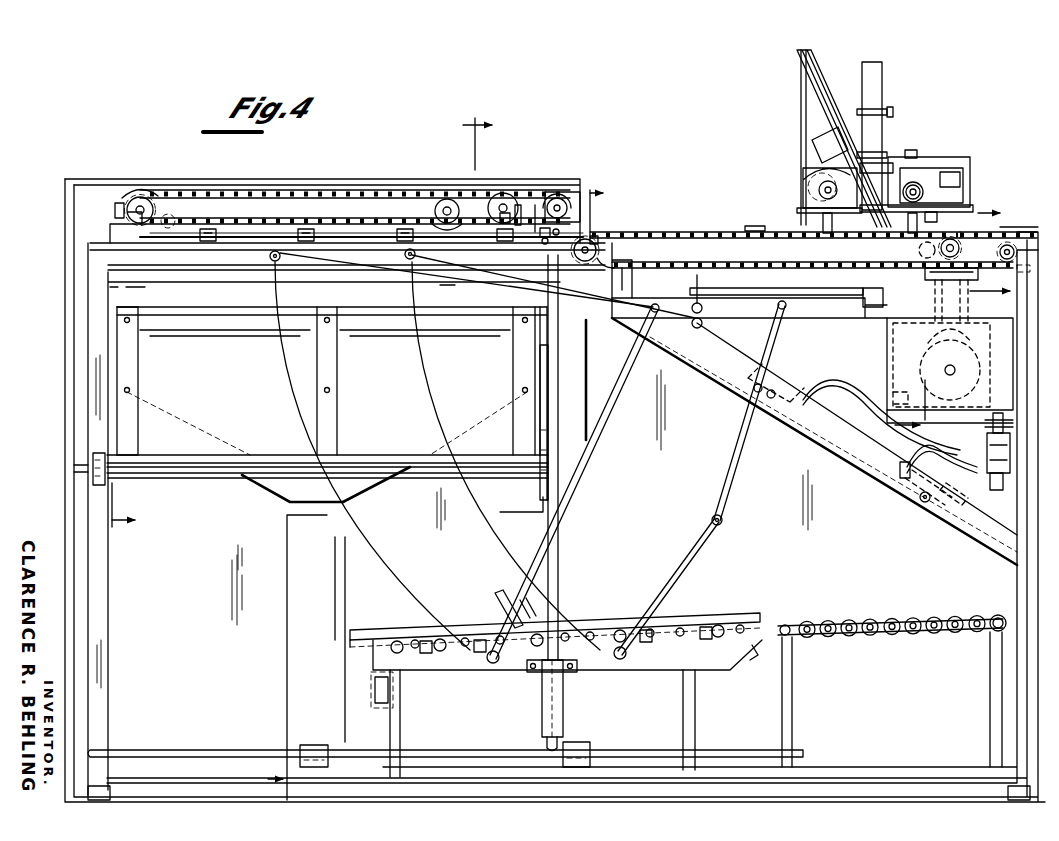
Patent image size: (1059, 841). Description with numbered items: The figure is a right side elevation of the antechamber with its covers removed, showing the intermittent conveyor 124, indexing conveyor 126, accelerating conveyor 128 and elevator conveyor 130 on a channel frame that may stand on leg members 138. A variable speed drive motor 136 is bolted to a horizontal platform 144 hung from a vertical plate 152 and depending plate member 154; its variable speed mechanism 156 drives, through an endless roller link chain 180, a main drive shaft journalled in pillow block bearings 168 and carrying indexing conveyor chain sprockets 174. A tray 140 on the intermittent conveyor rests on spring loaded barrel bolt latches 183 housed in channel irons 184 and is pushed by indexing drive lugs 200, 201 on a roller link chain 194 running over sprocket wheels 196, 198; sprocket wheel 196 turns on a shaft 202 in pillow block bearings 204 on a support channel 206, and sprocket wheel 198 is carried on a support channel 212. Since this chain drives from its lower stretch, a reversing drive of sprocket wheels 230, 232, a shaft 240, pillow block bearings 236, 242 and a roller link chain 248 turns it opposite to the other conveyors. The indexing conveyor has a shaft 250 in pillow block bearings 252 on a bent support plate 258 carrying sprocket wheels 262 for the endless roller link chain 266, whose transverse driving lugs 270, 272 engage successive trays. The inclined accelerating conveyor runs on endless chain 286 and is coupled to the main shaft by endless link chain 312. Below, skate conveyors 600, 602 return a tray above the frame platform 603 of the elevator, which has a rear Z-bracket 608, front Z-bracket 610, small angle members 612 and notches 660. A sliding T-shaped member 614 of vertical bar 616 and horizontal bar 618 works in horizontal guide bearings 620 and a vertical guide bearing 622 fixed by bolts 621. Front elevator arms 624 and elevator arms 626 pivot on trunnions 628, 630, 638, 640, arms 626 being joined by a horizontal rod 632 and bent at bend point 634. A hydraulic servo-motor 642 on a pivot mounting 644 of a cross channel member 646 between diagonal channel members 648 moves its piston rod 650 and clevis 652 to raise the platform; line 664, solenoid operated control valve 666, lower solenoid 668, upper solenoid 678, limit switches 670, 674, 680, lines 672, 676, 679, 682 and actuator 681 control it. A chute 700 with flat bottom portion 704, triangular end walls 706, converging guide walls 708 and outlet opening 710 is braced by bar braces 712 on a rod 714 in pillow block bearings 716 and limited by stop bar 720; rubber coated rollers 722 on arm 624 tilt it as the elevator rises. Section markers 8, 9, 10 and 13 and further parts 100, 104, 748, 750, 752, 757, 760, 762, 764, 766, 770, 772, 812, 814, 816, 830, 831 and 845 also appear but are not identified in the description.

The tree harvesting machine 100 is at (886, 84).
The boom 104 is at (800, 120).
The intermittent conveyor 124 is at (386, 176).
The indexing conveyor 126 is at (710, 229).
The accelerating conveyor 128 is at (1032, 232).
The elevator conveyor 130 is at (605, 604).
The variable speed drive motor 136 is at (931, 363).
The leg members 138 is at (150, 778).
The tray 140 is at (750, 612).
The horizontal platform 144 is at (936, 419).
The vertical plate 152 is at (893, 350).
The depending plate member 154 is at (890, 381).
The variable speed mechanism 156 is at (933, 340).
The pillow block bearings 168 is at (961, 250).
The indexing conveyor chain sprockets 174 is at (919, 250).
The endless roller link chain 180 is at (930, 290).
The spring loaded barrel bolt latch 183 is at (214, 243).
The channel iron 184 is at (316, 234).
The roller link chain 194 is at (308, 191).
The sprocket wheel 196 is at (148, 203).
The sprocket wheel 198 is at (503, 193).
The indexing drive lug 200 is at (124, 199).
The indexing drive lug 201 is at (505, 212).
The shaft 202 is at (115, 210).
The pillow block bearings 204 is at (170, 221).
The support channel 206 is at (118, 233).
The support channel 212 is at (538, 237).
The sprocket wheel 230 is at (447, 199).
The sprocket wheel 232 is at (535, 205).
The pillow block bearings 236 is at (434, 224).
The shaft 240 is at (578, 195).
The pillow block bearings 242 is at (556, 229).
The roller link chain 248 is at (518, 205).
The shaft 250 is at (583, 239).
The pillow block bearings 252 is at (601, 255).
The bent support plate 258 is at (636, 262).
The sprocket wheels 262 is at (624, 238).
The endless roller link chain 266 is at (678, 230).
The transverse driving lug 270 is at (722, 229).
The transverse driving lug 272 is at (805, 288).
The roller link type endless chain 286 is at (1026, 230).
The endless link chain 312 is at (1012, 272).
The skate conveyor 600 is at (897, 641).
The third skate conveyor 602 is at (708, 605).
The frame platform 603 is at (153, 258).
The rear Z-bracket 608 is at (758, 646).
The front Z-bracket 610 is at (350, 636).
The small angle members 612 is at (455, 632).
The sliding T-shaped member 614 is at (547, 745).
The vertical bar 616 is at (559, 560).
The horizontal bar 618 is at (618, 750).
The horizontal guide bearings 620 is at (312, 745).
The bolts 621 is at (533, 672).
The stabilizer bar vertical guide bearing 622 is at (876, 416).
The front elevator arms 624 is at (398, 276).
The elevator arms 626 is at (738, 462).
The trunnions 628 is at (786, 309).
The trunnions 630 is at (405, 255).
The horizontal rod 632 is at (586, 322).
The bend point 634 is at (722, 523).
The trunnion 638 is at (655, 304).
The trunnion 640 is at (270, 256).
The hydraulic servo-motor 642 is at (833, 405).
The pivot mounting 644 is at (923, 504).
The cross channel member 646 is at (951, 500).
The diagonal channel members 648 is at (973, 536).
The piston rod 650 is at (775, 393).
The clevis 652 is at (761, 386).
The notches 660 is at (603, 633).
The line 664 is at (907, 465).
The solenoid operated control valve 666 is at (996, 412).
The lower solenoid 668 is at (990, 482).
The limit switch 670 is at (392, 692).
The line 672 is at (86, 470).
The limit switch 674 is at (542, 244).
The line 676 is at (86, 457).
The upper solenoid 678 is at (987, 455).
The line 679 is at (858, 292).
The limit switch 680 is at (697, 300).
The actuator 681 is at (745, 392).
The lines 682 is at (862, 298).
The chute 700 is at (218, 395).
The flat bottom portion 704 is at (374, 315).
The triangular end walls 706 is at (86, 362).
The converging guide walls 708 is at (252, 481).
The outlet opening 710 is at (348, 504).
The bar braces 712 is at (138, 386).
The rod 714 is at (187, 479).
The pillow block bearings 716 is at (118, 478).
The stop bar 720 is at (203, 272).
The rubber coated rollers 722 is at (497, 594).
The cross bar 748 is at (240, 463).
The support 750 is at (850, 231).
The gear 752 is at (810, 191).
The bracket 757 is at (940, 214).
The saw housing 760 is at (885, 130).
The support 762 is at (950, 212).
The base plate 764 is at (800, 210).
The motor 766 is at (806, 188).
The base 770 is at (903, 172).
The bracket 772 is at (915, 152).
The housing 812 is at (932, 165).
The frame 814 is at (946, 168).
The box 816 is at (960, 178).
The mast 830 is at (862, 83).
The collar 831 is at (862, 110).
The rod 845 is at (801, 100).
The section line 8- 8 is at (523, 407).
The section line 9- 9 is at (476, 211).
The section line 10- 10 is at (1004, 254).
The section line 13- 13 is at (435, 492).